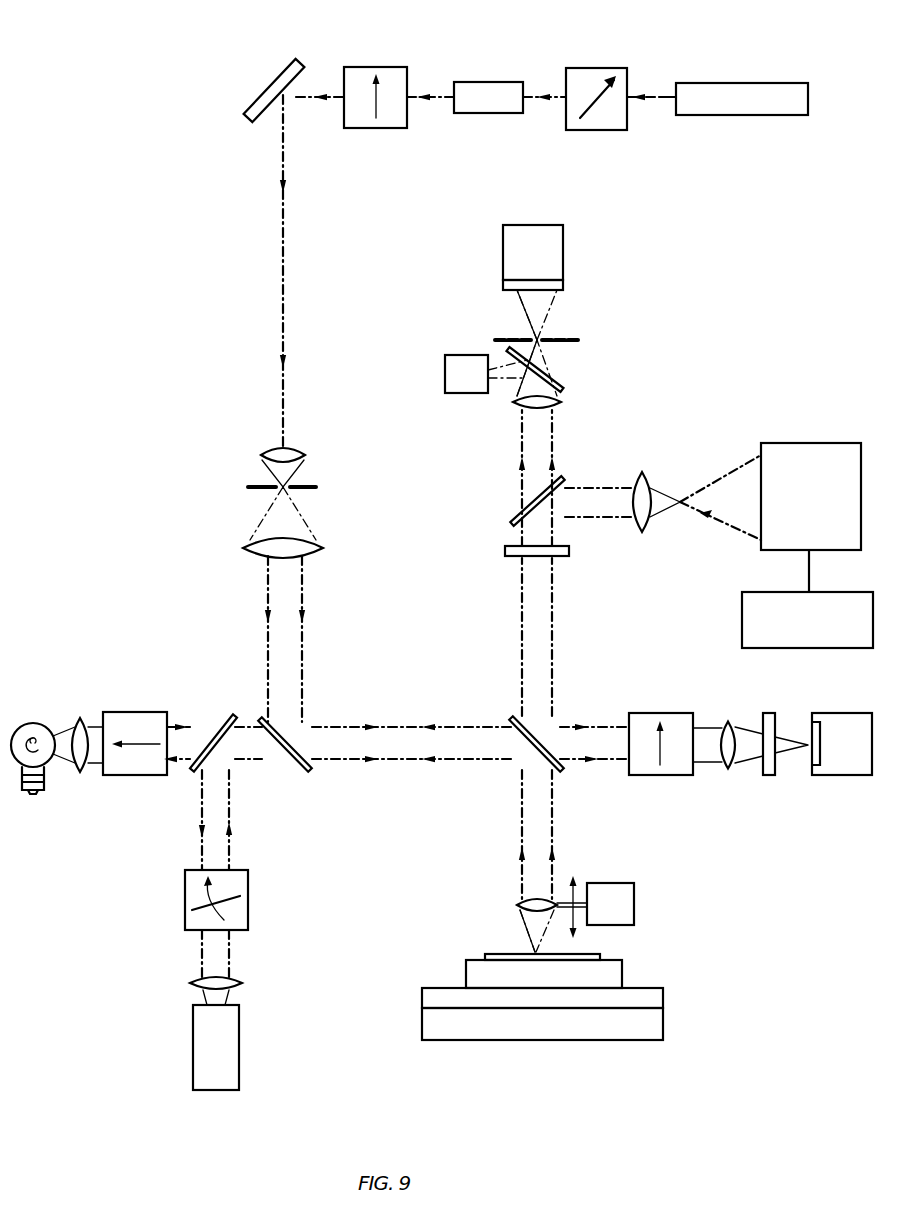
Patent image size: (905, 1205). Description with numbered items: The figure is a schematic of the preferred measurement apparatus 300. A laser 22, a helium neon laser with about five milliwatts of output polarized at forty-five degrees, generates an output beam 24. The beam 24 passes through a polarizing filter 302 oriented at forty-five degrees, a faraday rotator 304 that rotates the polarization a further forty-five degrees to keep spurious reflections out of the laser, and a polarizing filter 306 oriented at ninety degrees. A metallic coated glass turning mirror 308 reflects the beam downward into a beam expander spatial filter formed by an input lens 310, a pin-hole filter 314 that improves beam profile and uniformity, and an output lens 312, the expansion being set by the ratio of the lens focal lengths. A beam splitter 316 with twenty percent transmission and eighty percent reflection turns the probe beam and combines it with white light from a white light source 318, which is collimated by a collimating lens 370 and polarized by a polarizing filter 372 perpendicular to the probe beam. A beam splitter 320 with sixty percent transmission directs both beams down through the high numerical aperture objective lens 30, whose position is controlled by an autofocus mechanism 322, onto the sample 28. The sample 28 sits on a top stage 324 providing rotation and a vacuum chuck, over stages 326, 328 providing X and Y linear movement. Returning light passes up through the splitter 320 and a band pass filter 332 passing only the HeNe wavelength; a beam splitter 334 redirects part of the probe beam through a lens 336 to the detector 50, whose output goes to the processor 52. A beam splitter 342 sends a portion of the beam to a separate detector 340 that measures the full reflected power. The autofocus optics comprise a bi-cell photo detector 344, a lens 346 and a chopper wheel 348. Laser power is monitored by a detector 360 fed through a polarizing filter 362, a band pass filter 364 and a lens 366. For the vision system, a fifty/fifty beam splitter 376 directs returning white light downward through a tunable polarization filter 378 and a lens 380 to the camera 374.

The laser 22 is at (745, 83).
The output beam 24 is at (658, 97).
The sample 28 is at (600, 955).
The objective lens 30 is at (518, 902).
The detector 50 is at (812, 443).
The processor 52 is at (742, 600).
The apparatus 300 is at (250, 280).
The polarizing filter 302 is at (590, 68).
The faraday rotator 304 is at (475, 82).
The polarizing filter 306 is at (378, 67).
The turning mirror 308 is at (278, 73).
The input lens 310 is at (297, 450).
The output lens 312 is at (318, 545).
The pin-hole filter 314 is at (312, 485).
The beam splitter 316 is at (277, 740).
The white light source 318 is at (35, 722).
The beam splitter 320 is at (540, 738).
The autofocus mechanism 322 is at (612, 884).
The top stage 324 is at (622, 975).
The stage 326 is at (663, 998).
The stage 328 is at (663, 1020).
The band pass filter 332 is at (572, 556).
The beam splitter 334 is at (530, 500).
The lens 336 is at (642, 474).
The detector 340 is at (445, 372).
The beam splitter 342 is at (562, 380).
The bi-cell photo detector 344 is at (563, 228).
The lens 346 is at (562, 402).
The chopper wheel 348 is at (565, 338).
The detector 360 is at (845, 776).
The polarizing filter 362 is at (652, 713).
The band pass filter 364 is at (769, 776).
The lens 366 is at (728, 770).
The collimating lens 370 is at (80, 775).
The polarizing filter 372 is at (140, 776).
The camera 374 is at (238, 1038).
The beam splitter 376 is at (230, 717).
The tunable polarization filter 378 is at (248, 903).
The lens 380 is at (242, 982).